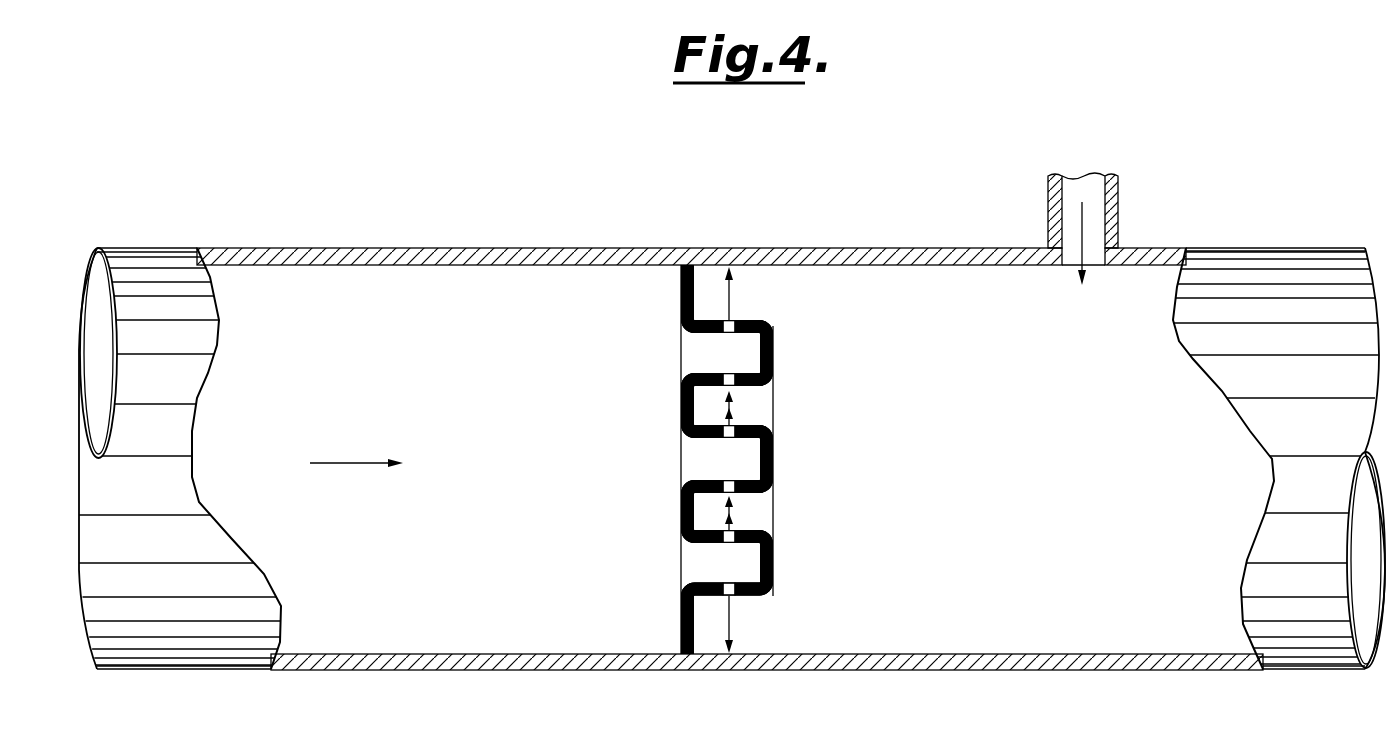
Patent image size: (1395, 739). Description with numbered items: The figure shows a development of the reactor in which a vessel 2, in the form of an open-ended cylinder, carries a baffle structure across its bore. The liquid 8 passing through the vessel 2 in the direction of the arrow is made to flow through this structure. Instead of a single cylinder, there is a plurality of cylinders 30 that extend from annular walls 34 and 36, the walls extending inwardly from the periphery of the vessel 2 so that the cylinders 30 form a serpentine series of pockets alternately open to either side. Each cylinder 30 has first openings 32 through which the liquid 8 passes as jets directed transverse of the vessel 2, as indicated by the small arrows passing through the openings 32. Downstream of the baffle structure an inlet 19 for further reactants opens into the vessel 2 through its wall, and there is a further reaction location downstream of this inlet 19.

The vessel 2 is at (523, 248).
The liquid 8 is at (391, 388).
The inlet for further reactants 19 is at (1119, 190).
The cylinders 30 is at (768, 365).
The first openings 32 is at (730, 324).
The annular wall 34 is at (680, 298).
The annular wall 36 is at (683, 406).